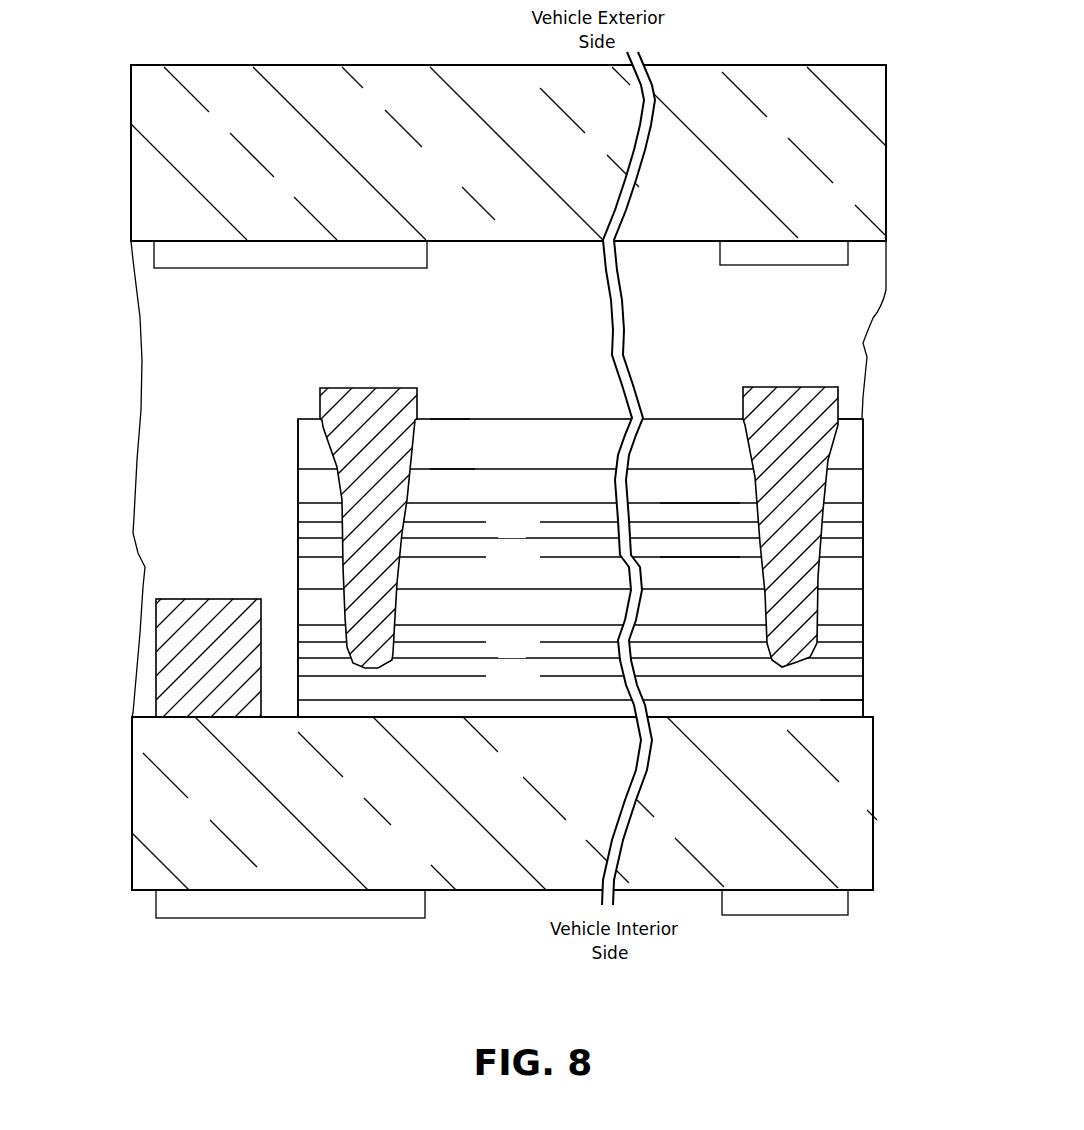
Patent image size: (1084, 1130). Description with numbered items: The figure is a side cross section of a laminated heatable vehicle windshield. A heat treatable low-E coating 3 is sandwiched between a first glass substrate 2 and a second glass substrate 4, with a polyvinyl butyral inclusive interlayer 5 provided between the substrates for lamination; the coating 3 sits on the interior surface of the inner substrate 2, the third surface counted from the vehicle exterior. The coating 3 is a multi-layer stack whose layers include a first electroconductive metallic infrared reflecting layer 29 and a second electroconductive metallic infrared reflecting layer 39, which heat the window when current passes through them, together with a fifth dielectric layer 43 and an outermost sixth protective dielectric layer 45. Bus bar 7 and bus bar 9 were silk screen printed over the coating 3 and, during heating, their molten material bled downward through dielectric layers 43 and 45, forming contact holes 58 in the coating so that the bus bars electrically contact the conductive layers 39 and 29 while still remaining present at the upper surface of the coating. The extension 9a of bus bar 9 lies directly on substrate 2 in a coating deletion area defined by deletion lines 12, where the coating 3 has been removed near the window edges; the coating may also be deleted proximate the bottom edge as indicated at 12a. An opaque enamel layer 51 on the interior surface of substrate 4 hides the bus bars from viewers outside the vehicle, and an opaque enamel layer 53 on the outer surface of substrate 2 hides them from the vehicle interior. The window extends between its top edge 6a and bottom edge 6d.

The glass substrate 2 is at (483, 882).
The coating 3 is at (878, 708).
The glass substrate 4 is at (879, 118).
The polyvinyl butyral (PVB) inclusive interlayer 5 is at (858, 348).
The top edge 6a is at (131, 870).
The bottom edge 6d is at (874, 730).
The bus bar 7 is at (359, 400).
The bus bar 9 is at (816, 392).
The extension of bus bar 9a is at (215, 607).
The deletion lines 12 is at (297, 608).
The coating deletion area proximate bottom edge 12a is at (867, 707).
The first electroconductive metallic infrared reflecting layer 29 is at (836, 648).
The second electroconductive metallic IR reflecting layer 39 is at (680, 535).
The fifth dielectric layer 43 is at (456, 488).
The sixth protective dielectric layer 45 is at (441, 432).
The opaque enamel layer 51 is at (368, 268).
The opaque enamel layer 53 is at (370, 918).
The contact holes 58 is at (832, 453).